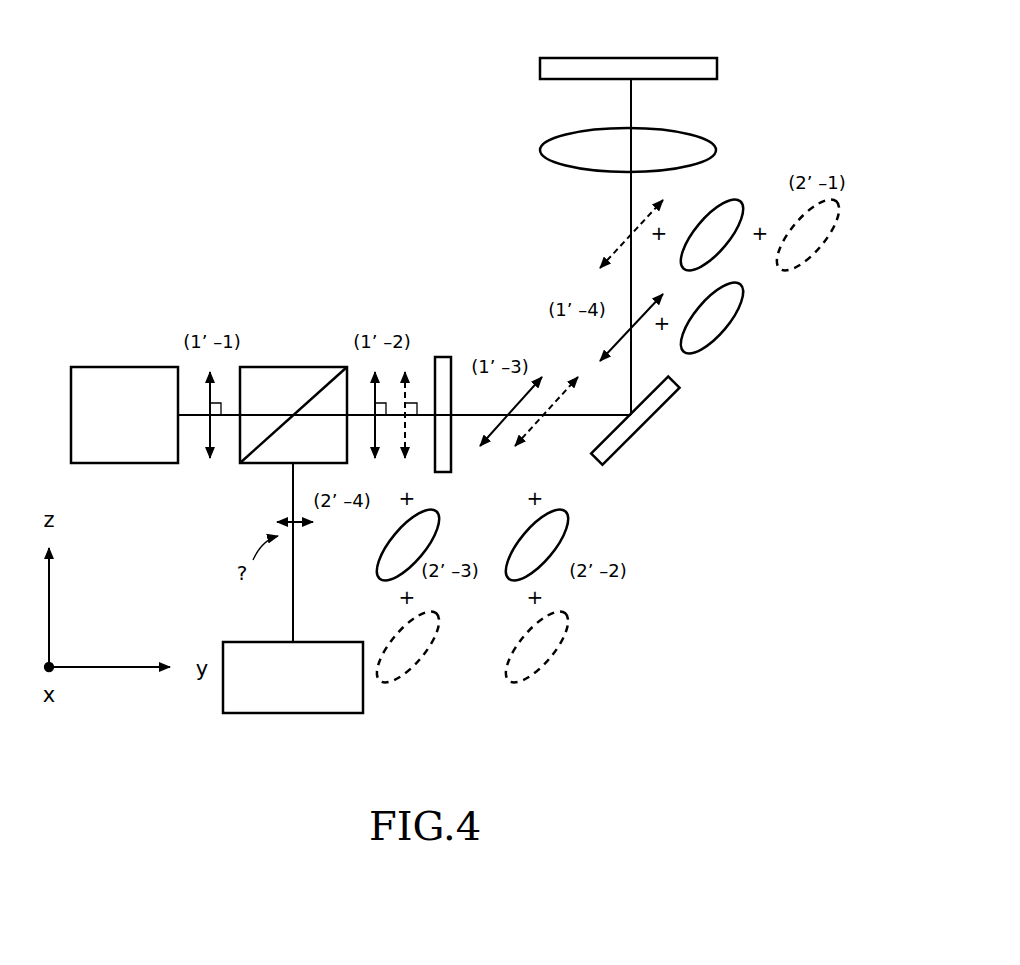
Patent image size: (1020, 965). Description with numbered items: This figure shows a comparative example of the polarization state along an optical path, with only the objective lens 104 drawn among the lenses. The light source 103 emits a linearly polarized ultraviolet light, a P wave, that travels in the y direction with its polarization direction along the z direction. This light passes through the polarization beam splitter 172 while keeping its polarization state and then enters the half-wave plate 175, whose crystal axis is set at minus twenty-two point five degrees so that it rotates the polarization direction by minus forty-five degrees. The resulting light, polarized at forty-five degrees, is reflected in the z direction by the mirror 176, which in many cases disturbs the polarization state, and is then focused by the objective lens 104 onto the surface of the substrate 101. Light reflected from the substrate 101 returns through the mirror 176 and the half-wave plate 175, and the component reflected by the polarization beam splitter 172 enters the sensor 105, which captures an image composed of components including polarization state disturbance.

The substrate 101 is at (717, 70).
The objective lens 104 is at (707, 130).
The light source 103 is at (110, 367).
The polarization beam splitter 172 is at (287, 367).
The half-wave plate 175 is at (445, 472).
The mirror 176 is at (642, 427).
The sensor 105 is at (305, 713).